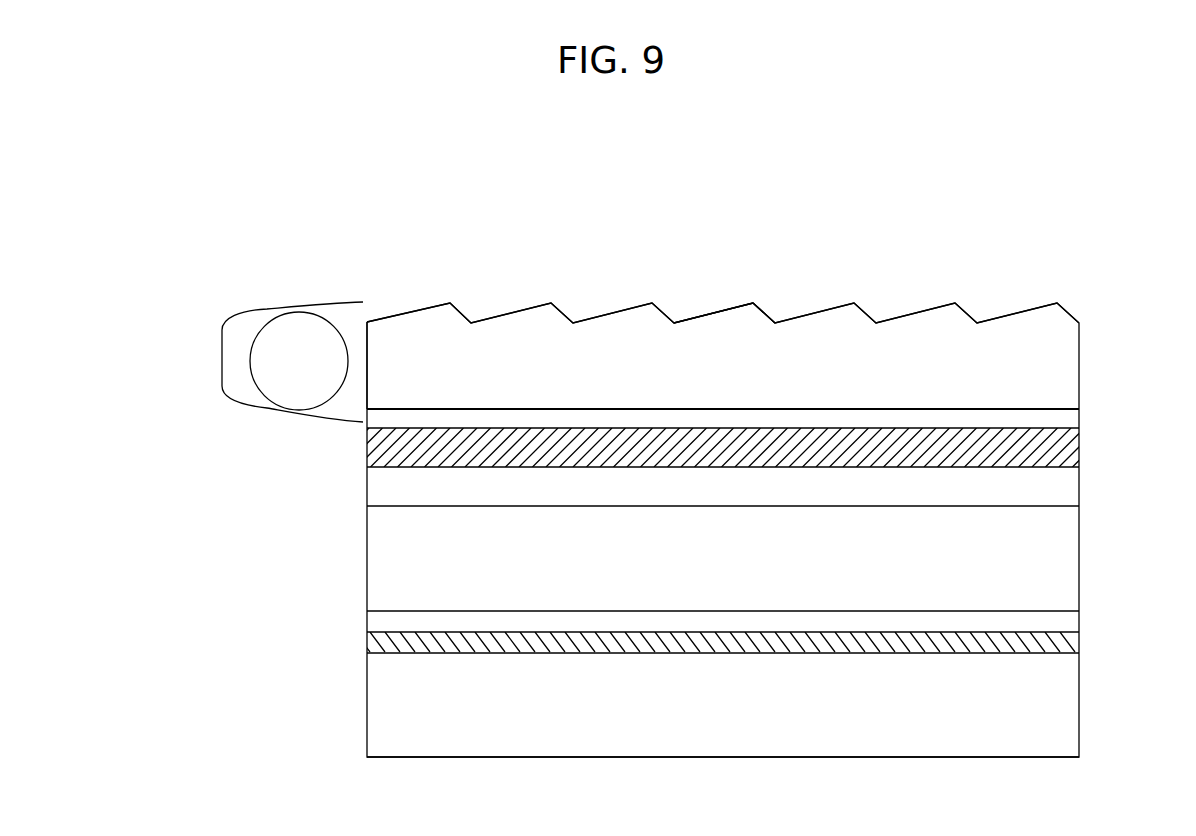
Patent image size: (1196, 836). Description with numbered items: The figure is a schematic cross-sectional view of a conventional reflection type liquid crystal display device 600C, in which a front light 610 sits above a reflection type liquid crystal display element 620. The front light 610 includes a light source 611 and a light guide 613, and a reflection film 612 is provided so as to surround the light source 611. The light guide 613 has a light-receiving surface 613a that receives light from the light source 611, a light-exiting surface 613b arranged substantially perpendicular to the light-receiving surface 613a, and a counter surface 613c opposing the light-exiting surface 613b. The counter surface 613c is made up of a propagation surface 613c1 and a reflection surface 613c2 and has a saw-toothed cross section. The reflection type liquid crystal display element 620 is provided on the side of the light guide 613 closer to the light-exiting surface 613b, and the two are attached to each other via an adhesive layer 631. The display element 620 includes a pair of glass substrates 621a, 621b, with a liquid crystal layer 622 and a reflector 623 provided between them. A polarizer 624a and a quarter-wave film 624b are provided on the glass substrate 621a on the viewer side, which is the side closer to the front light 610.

The reflection type liquid crystal display device 600C is at (140, 169).
The front light 610 is at (216, 289).
The light source 611 is at (277, 337).
The reflection film 612 is at (325, 302).
The light guide 613 is at (932, 337).
The light-receiving surface 613a is at (367, 362).
The light-exiting surface 613b is at (540, 410).
The counter surface 613c is at (852, 228).
The propagation surface 613c1 is at (710, 313).
The reflection surface 613c2 is at (770, 318).
The reflection type liquid crystal display element 620 is at (216, 430).
The adhesive layer 631 is at (1073, 413).
The polarizer 624a is at (385, 440).
The λ/4 film 624b is at (385, 487).
The glass substrate 621a is at (385, 559).
The liquid crystal layer 622 is at (385, 622).
The reflector 623 is at (385, 642).
The glass substrate 621b is at (385, 707).